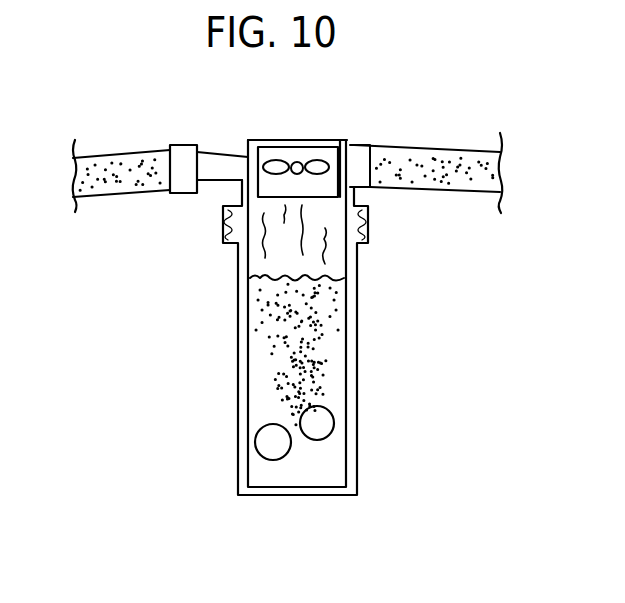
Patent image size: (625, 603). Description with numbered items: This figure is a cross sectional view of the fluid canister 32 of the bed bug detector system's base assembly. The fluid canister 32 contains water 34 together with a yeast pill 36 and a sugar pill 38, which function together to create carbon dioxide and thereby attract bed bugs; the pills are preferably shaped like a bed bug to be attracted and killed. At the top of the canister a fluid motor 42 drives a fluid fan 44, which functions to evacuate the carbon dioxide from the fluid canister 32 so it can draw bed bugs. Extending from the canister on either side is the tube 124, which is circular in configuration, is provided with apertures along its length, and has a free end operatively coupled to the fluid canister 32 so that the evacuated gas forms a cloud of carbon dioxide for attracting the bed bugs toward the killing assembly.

The fluid canister 32 is at (355, 305).
The water 34 is at (260, 382).
The yeast pill 36 is at (318, 430).
The sugar pill 38 is at (257, 447).
The fluid motor 42 is at (317, 156).
The fluid fan 44 is at (277, 163).
The tube 124 is at (147, 192).